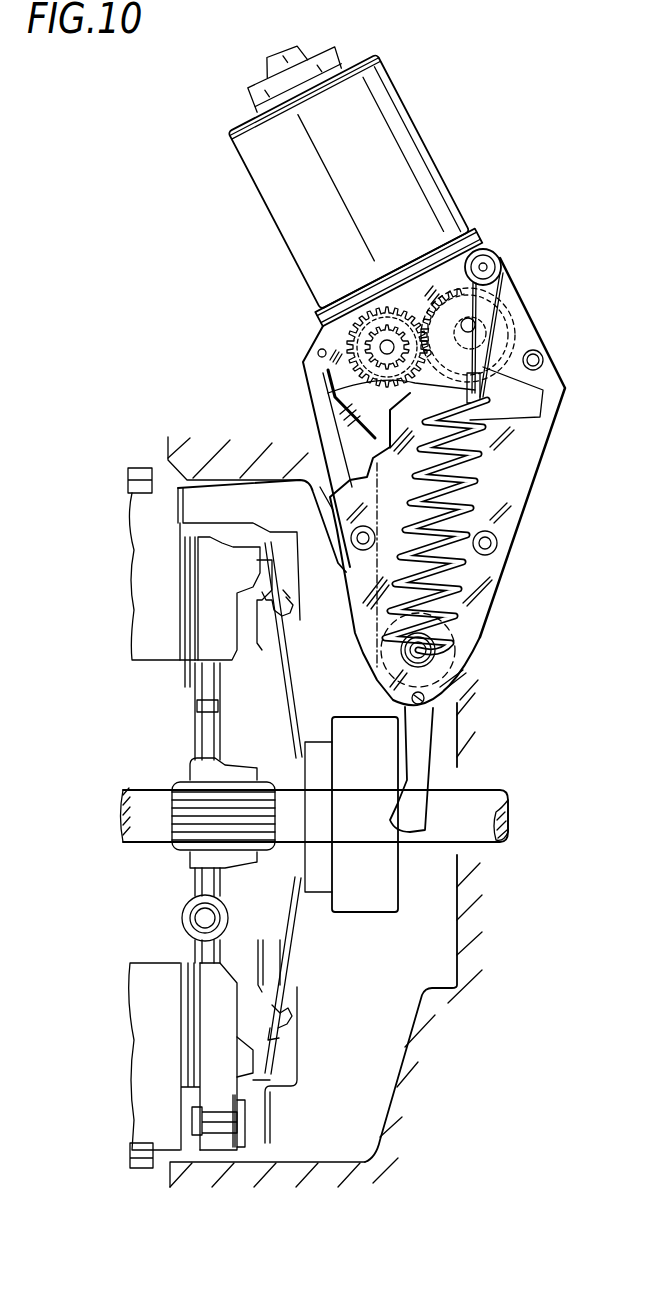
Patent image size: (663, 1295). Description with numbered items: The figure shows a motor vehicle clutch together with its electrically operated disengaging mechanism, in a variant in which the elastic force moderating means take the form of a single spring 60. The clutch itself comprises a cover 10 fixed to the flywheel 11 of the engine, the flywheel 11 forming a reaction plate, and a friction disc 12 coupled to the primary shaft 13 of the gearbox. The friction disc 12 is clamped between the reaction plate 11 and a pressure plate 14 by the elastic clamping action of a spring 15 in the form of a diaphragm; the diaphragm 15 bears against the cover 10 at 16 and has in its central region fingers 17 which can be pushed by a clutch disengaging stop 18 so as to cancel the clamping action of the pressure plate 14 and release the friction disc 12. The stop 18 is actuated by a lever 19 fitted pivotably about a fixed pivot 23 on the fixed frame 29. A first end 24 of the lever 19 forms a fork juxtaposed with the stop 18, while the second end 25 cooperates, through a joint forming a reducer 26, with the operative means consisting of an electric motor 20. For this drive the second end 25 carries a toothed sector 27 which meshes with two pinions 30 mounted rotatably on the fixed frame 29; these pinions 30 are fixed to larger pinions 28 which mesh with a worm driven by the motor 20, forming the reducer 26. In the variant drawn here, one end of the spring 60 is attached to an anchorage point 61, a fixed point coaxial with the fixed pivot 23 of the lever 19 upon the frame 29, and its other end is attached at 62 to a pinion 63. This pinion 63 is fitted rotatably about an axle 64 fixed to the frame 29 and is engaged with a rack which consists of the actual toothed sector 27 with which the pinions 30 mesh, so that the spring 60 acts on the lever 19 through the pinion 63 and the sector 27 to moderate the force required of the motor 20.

The cover 10 is at (247, 522).
The flywheel 11 is at (133, 516).
The friction disc 12 is at (180, 604).
The primary shaft 13 is at (137, 800).
The pressure plate 14 is at (228, 578).
The spring 15 is at (287, 587).
The bearing point 16 is at (262, 600).
The fingers 17 is at (304, 684).
The clutch disengaging stop 18 is at (360, 912).
The lever 19 is at (462, 615).
The electric motor 20 is at (400, 116).
The fixed pivot 23 is at (465, 688).
The first end 24 is at (393, 822).
The second end 25 is at (327, 395).
The reducer 26 is at (404, 297).
The toothed sector 27 is at (330, 367).
The larger pinions 28 is at (368, 320).
The fixed frame 29 is at (540, 334).
The pinions 30 is at (370, 343).
The spring 60 is at (473, 478).
The anchorage point 61 is at (410, 656).
The attachment point 62 is at (486, 262).
The pinion 63 is at (488, 300).
The axle 64 is at (476, 326).